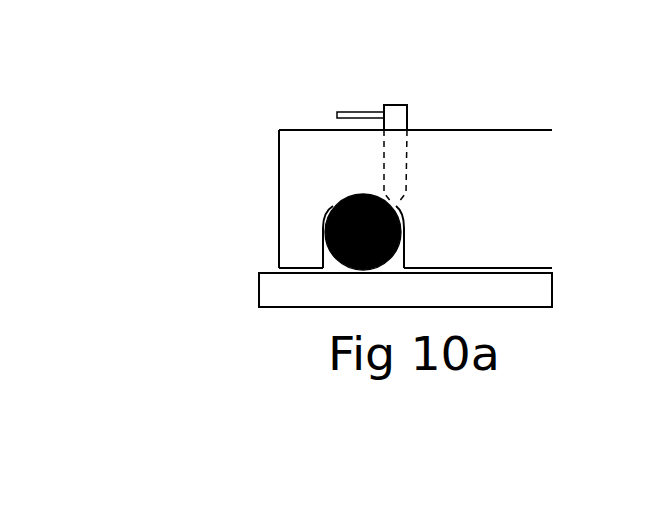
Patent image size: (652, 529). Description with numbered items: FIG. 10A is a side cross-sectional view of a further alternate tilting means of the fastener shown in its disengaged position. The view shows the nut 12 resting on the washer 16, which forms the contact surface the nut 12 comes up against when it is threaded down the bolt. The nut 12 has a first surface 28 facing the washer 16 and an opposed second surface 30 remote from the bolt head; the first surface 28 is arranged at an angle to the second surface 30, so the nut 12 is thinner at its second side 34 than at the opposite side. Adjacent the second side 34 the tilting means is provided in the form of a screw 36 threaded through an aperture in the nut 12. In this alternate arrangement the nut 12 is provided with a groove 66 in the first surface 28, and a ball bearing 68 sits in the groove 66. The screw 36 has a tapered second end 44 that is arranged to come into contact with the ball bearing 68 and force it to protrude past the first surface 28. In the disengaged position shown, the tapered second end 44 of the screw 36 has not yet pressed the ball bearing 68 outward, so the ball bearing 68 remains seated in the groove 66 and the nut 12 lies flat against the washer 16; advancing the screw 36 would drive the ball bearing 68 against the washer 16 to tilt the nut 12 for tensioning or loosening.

The nut 12 is at (495, 177).
The washer 16 is at (275, 295).
The first surface 28 is at (508, 268).
The second surface 30 is at (308, 128).
The second side 34 is at (273, 127).
The screw 36 is at (400, 115).
The second end 44 is at (402, 204).
The groove 66 is at (327, 218).
The ball bearing 68 is at (328, 260).